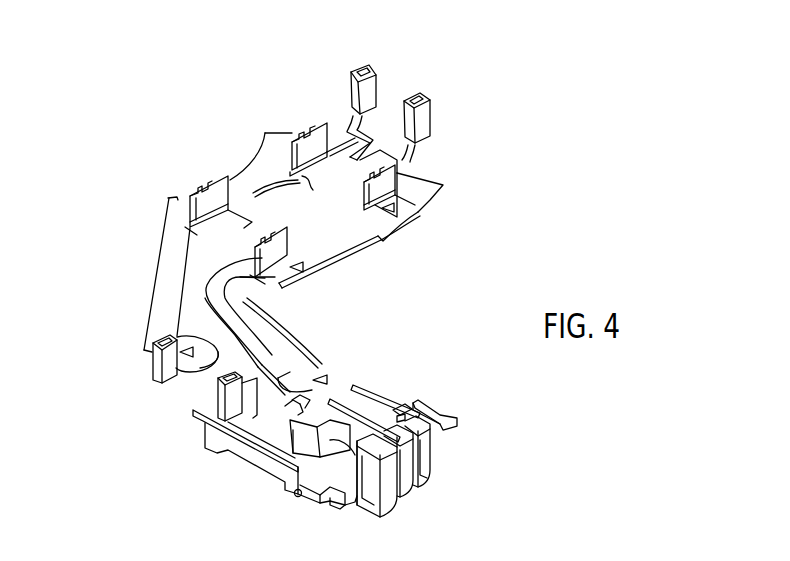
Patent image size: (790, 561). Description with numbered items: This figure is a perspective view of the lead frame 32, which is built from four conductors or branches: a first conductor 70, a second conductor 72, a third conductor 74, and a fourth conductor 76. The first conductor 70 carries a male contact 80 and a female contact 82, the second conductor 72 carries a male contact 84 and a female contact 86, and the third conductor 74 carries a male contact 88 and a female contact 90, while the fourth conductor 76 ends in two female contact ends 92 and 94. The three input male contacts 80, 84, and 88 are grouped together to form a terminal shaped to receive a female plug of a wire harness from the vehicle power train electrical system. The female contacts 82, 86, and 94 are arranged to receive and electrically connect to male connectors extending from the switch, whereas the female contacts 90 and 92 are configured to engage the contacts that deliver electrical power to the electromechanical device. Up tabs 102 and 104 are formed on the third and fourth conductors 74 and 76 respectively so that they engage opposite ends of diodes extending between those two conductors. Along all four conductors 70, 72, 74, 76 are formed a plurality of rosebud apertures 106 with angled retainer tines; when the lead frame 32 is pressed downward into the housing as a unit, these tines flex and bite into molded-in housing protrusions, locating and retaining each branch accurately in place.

The lead frame 32 is at (440, 51).
The first conductor 70 is at (204, 453).
The second conductor 72 is at (398, 500).
The third conductor 74 is at (383, 242).
The fourth conductor 76 is at (170, 196).
The male contact 80 is at (365, 430).
The female contact 82 is at (250, 352).
The male contact 84 is at (414, 414).
The female contact 86 is at (312, 412).
The male contact 88 is at (452, 413).
The female contact 90 is at (426, 98).
The female contact end 92 is at (371, 67).
The female contact end 94 is at (154, 336).
The up tab 102 is at (321, 120).
The up tab 104 is at (397, 177).
The rosebud aperture 106 is at (393, 204).